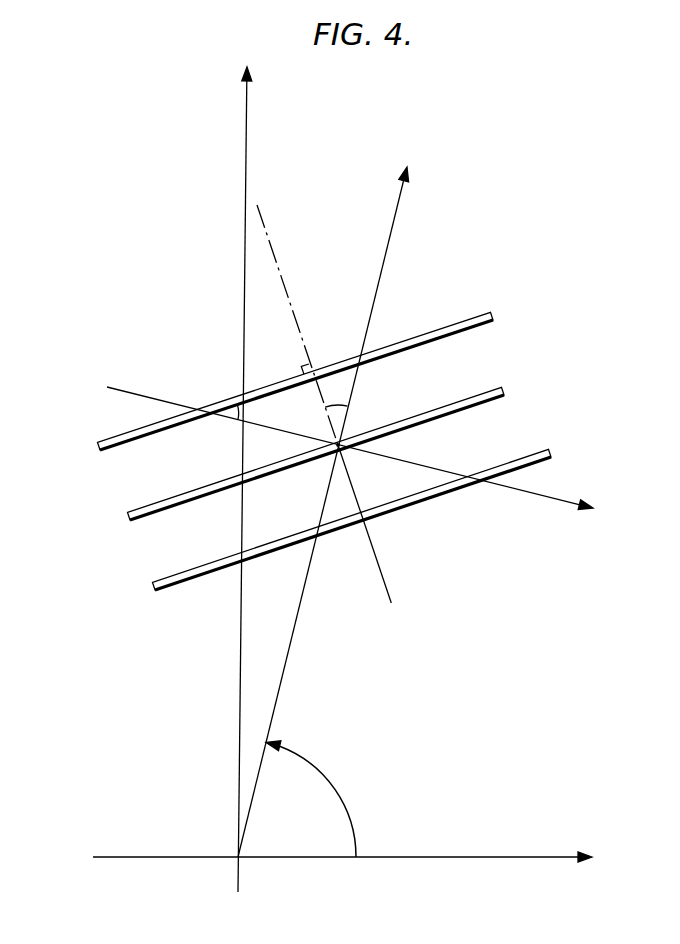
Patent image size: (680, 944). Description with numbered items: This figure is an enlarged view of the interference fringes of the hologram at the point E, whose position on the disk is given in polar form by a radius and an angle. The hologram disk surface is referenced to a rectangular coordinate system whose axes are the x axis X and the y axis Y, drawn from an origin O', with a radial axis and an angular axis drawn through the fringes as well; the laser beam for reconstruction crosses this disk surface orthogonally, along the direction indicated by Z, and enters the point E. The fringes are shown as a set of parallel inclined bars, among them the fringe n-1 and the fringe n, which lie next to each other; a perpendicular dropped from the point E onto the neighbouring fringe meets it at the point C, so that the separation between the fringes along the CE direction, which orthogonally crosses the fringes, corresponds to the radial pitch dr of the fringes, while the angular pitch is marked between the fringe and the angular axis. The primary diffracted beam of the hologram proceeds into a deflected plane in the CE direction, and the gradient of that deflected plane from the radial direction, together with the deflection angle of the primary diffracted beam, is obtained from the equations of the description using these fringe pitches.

The n-1 diffraction pattern (grating order line) n-1 is at (376, 375).
The n diffraction pattern line n is at (326, 449).
The point C is at (315, 356).
The point E is at (372, 464).
The pitch of interference fringes in the r direction dr is at (326, 404).
The x axis X is at (351, 861).
The y axis Y is at (326, 467).
The origin O' is at (253, 886).
The Z axis label Z is at (675, 855).